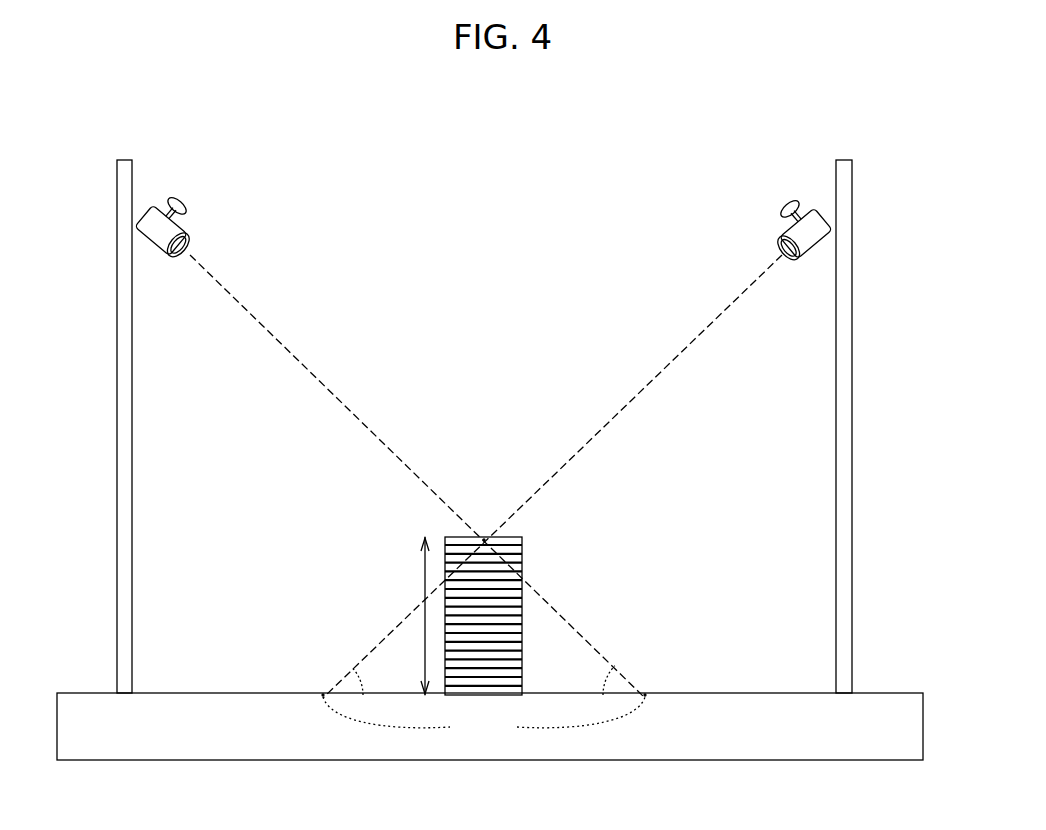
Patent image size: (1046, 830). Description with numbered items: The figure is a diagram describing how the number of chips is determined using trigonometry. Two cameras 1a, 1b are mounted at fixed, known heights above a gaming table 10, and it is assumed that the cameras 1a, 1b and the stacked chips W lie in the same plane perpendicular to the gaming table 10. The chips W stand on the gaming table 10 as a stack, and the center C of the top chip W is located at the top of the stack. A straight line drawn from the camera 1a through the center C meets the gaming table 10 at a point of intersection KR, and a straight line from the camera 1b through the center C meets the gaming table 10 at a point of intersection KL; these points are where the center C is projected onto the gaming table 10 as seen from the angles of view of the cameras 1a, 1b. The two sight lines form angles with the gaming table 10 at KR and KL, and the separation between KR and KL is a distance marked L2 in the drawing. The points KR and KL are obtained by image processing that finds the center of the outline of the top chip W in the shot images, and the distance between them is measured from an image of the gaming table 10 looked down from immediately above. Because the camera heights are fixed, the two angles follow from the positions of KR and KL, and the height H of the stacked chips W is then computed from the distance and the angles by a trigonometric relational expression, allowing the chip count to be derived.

The camera 1a is at (790, 230).
The camera 1b is at (190, 224).
The gaming table 10 is at (898, 716).
The chips W is at (522, 550).
The center of the top chip C is at (482, 516).
The height of the stacked chips H is at (408, 606).
The point of intersection KR is at (300, 676).
The point of intersection KL is at (665, 676).
The distance between KR and KL L2 is at (484, 724).